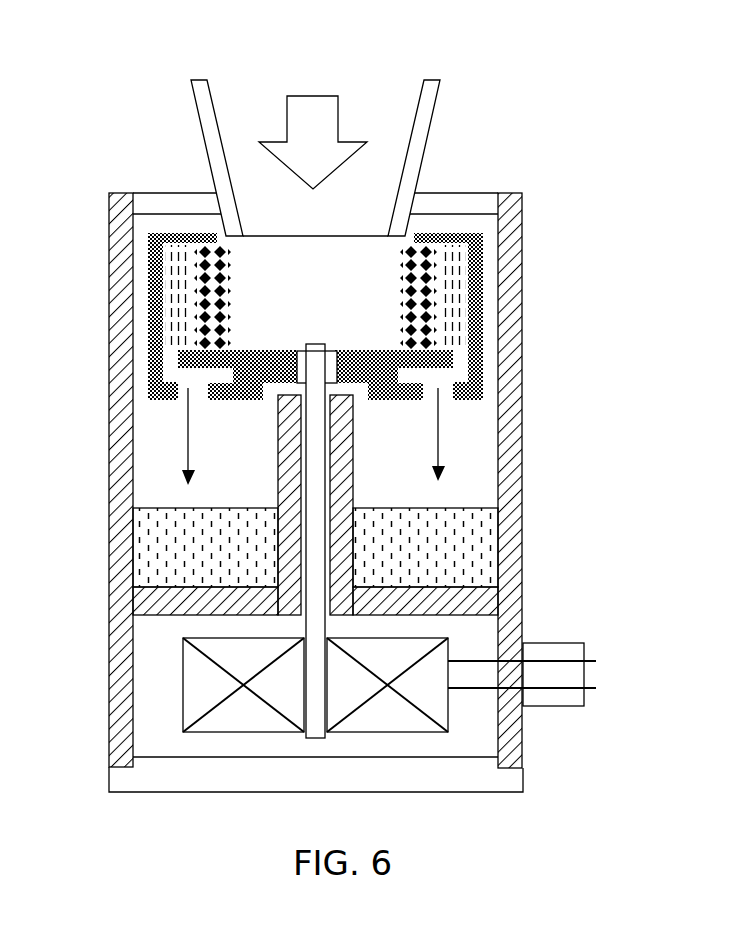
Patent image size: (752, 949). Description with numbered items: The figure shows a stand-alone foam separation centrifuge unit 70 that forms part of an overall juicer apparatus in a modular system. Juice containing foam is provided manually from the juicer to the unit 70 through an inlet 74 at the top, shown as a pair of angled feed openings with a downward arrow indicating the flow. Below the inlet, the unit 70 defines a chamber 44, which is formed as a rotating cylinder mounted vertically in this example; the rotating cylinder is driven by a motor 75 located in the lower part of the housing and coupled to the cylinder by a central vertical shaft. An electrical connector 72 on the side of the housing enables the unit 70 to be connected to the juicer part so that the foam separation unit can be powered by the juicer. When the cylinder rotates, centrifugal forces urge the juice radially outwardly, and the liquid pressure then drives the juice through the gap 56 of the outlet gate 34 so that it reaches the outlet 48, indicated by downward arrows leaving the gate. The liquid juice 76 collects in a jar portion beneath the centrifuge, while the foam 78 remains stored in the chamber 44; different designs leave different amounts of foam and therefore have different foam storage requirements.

The foam separation centrifuge unit 70 is at (616, 173).
The inlet 74 is at (223, 130).
The chamber 44 is at (285, 287).
The foam 78 is at (418, 270).
The liquid juice 76 is at (125, 285).
The gap 56 is at (176, 305).
The outlet gate 34 is at (385, 355).
The outlet 48 is at (198, 383).
The electrical connector 72 is at (561, 645).
The motor 75 is at (210, 733).